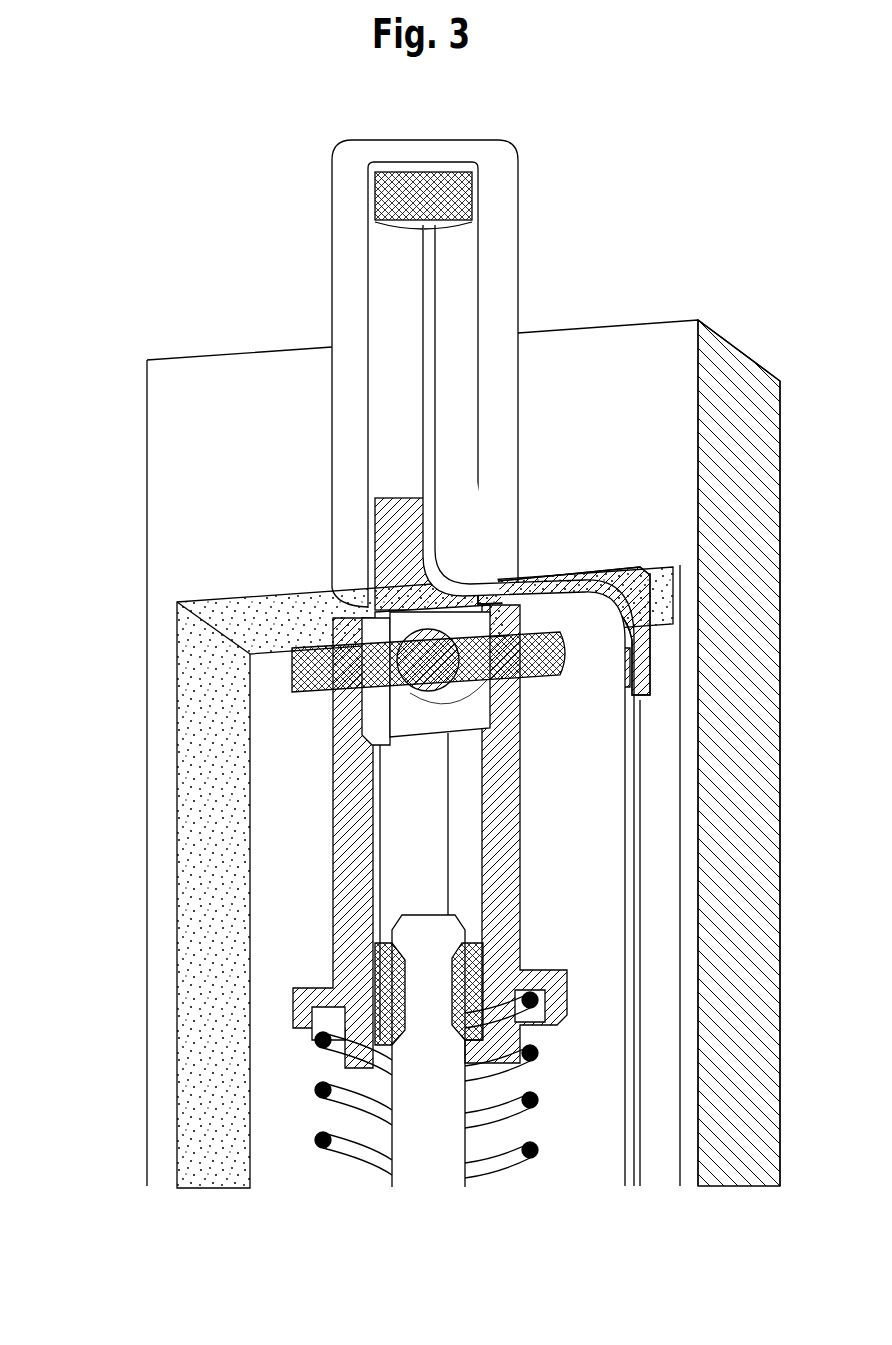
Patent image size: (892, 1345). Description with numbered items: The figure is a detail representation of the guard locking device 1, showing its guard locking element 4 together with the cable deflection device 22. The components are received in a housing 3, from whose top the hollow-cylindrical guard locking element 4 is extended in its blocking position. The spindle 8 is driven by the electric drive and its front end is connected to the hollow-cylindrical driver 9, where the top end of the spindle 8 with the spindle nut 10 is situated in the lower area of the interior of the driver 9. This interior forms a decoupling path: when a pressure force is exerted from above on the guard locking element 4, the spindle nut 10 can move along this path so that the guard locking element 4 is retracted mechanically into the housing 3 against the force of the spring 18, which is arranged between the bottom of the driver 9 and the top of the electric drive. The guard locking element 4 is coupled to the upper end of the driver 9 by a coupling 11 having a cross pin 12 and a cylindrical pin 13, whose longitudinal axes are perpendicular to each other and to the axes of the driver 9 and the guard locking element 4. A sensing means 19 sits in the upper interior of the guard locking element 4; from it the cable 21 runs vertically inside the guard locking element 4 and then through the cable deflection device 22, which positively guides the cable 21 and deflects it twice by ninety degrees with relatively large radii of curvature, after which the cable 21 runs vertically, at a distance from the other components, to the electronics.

The guard locking device 1 is at (103, 1137).
The housing 3 is at (647, 333).
The guard locking element 4 is at (530, 207).
The spindle 8 is at (439, 1133).
The driver 9 is at (326, 803).
The spindle nut 10 is at (466, 942).
The coupling 11 is at (603, 775).
The cross pin 12 is at (447, 708).
The cylindrical pin 13 is at (522, 674).
The spring 18 is at (357, 1163).
The sensing means 19 is at (388, 172).
The cable 21 is at (442, 573).
The cable deflection device 22 is at (375, 516).